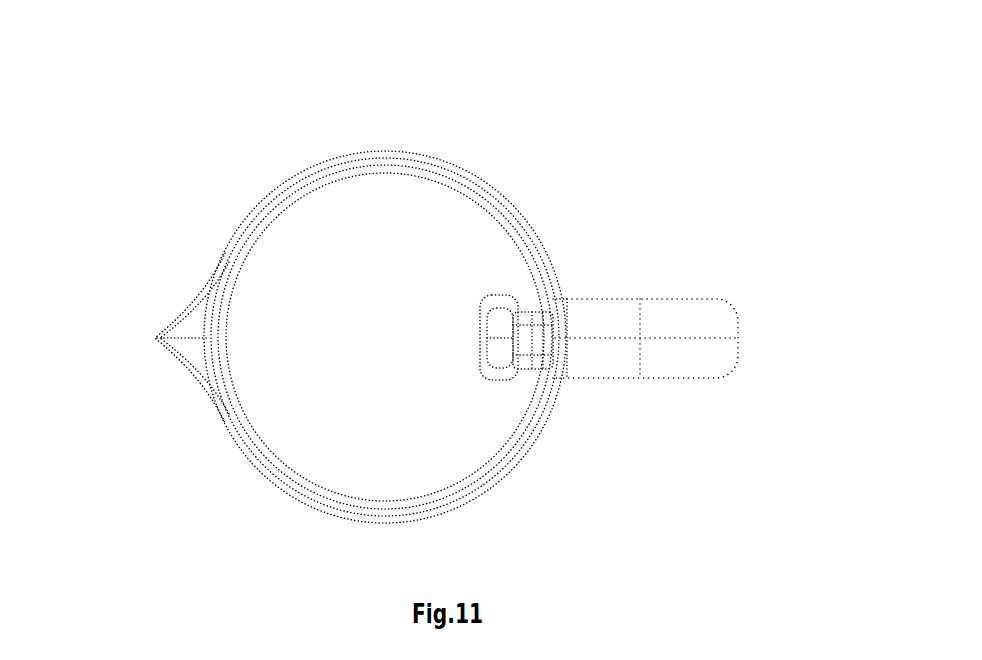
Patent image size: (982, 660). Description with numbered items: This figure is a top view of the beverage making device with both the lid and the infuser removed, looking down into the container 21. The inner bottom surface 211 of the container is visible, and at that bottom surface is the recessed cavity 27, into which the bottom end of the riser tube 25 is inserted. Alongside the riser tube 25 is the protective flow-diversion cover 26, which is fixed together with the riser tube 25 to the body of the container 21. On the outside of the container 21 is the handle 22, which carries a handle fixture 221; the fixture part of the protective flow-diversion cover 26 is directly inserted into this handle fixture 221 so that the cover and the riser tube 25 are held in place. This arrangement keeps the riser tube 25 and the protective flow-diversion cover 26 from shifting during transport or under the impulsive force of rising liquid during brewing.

The container 21 is at (315, 190).
The inner bottom surface of the container 211 is at (328, 368).
The handle 22 is at (682, 317).
The handle fixture 221 is at (558, 335).
The recessed cavity 27 is at (512, 310).
The protective flow-diversion cover 26 is at (532, 342).
The riser tube 25 is at (505, 340).